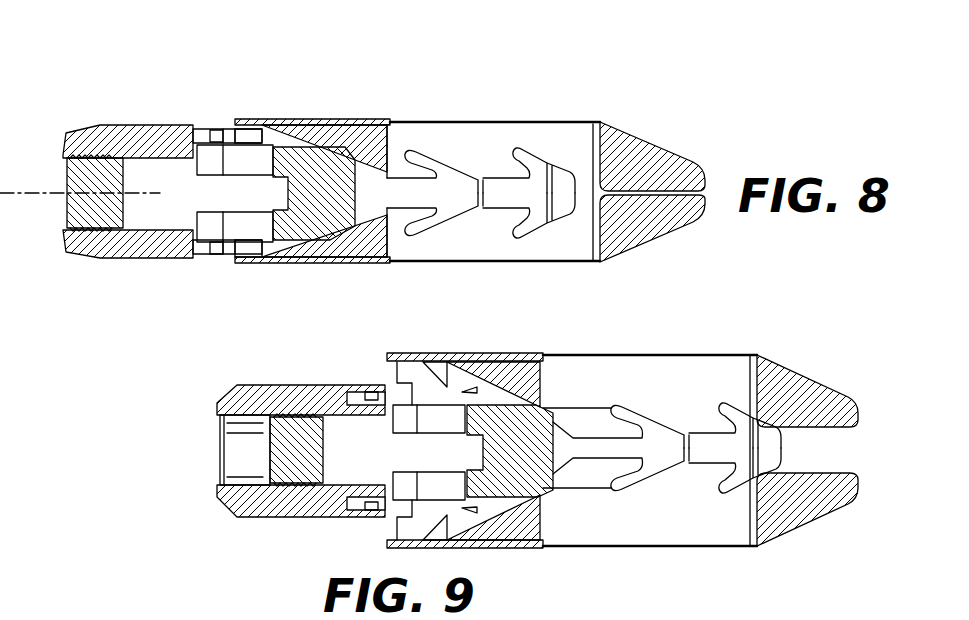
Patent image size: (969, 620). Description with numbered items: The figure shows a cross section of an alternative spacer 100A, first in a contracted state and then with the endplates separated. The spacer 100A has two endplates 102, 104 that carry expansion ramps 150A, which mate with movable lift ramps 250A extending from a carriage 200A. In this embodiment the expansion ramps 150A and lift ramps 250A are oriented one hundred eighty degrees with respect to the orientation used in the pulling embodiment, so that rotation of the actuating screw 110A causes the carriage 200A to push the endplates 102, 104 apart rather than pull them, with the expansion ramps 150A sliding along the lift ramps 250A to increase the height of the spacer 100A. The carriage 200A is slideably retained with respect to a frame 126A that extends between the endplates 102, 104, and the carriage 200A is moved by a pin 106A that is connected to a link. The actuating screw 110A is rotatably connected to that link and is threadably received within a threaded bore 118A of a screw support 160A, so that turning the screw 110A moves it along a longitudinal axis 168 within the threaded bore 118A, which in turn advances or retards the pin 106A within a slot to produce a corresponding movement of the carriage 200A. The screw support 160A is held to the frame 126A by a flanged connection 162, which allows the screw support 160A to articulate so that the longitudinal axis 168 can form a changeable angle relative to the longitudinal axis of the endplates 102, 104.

In FIG. 8, the alternative spacer 100A is at (181, 202).
In FIG. 9, the alternative spacer 100A is at (314, 455).
In FIG. 8, the endplate 102 is at (560, 121).
In FIG. 9, the endplate 102 is at (650, 352).
In FIG. 8, the endplate 104 is at (466, 263).
In FIG. 9, the endplate 104 is at (658, 527).
In FIG. 8, the pin 106A is at (157, 218).
In FIG. 9, the pin 106A is at (350, 473).
In FIG. 8, the actuating screw 110A is at (82, 250).
In FIG. 9, the actuating screw 110A is at (268, 462).
In FIG. 8, the threaded bore 118A is at (152, 170).
In FIG. 8, the frame 126A is at (258, 128).
In FIG. 8, the expansion ramp 150A is at (441, 168).
In FIG. 9, the expansion ramp 150A is at (662, 448).
In FIG. 8, the screw support 160A is at (182, 260).
In FIG. 9, the screw support 160A is at (287, 397).
In FIG. 8, the flanged connection 162 is at (220, 128).
In FIG. 8, the longitudinal axis 168 is at (48, 184).
In FIG. 8, the carriage 200A is at (293, 235).
In FIG. 9, the carriage 200A is at (442, 417).
In FIG. 8, the lift ramp 250A is at (450, 171).